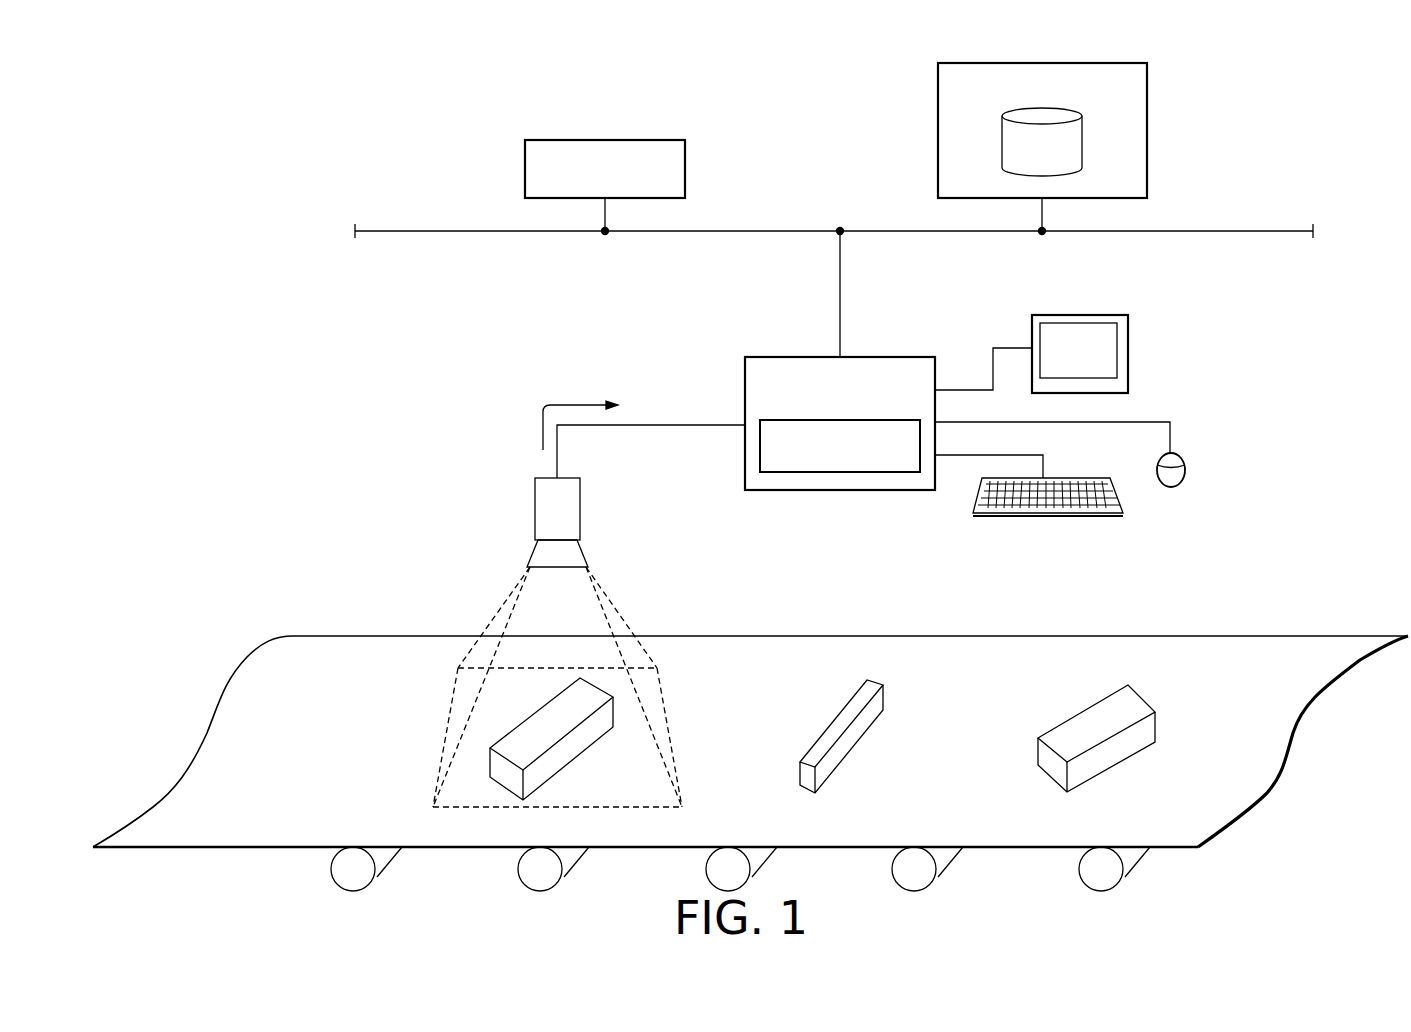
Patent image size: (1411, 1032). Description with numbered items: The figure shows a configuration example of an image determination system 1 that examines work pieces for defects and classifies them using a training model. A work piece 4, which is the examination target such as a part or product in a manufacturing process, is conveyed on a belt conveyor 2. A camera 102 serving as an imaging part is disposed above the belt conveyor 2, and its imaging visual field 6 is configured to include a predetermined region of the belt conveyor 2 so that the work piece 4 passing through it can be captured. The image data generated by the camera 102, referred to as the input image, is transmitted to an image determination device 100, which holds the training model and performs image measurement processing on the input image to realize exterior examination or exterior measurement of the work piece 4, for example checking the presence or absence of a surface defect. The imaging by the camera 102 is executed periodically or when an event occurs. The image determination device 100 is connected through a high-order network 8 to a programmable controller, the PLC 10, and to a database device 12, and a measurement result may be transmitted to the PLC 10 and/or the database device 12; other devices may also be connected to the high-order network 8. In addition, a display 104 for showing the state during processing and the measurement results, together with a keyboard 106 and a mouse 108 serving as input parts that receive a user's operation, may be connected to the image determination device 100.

The image determination system 1 is at (1346, 50).
The belt conveyor 2 is at (1205, 660).
The work piece 4 is at (560, 720).
The imaging visual field 6 is at (676, 752).
The high-order network 8 is at (1222, 230).
The programmable controller (PLC) 10 is at (620, 138).
The database device 12 is at (1080, 62).
The image determination device 100 is at (880, 357).
The camera 102 is at (580, 512).
The display 104 is at (1092, 313).
The keyboard 106 is at (1045, 518).
The mouse 108 is at (1187, 470).